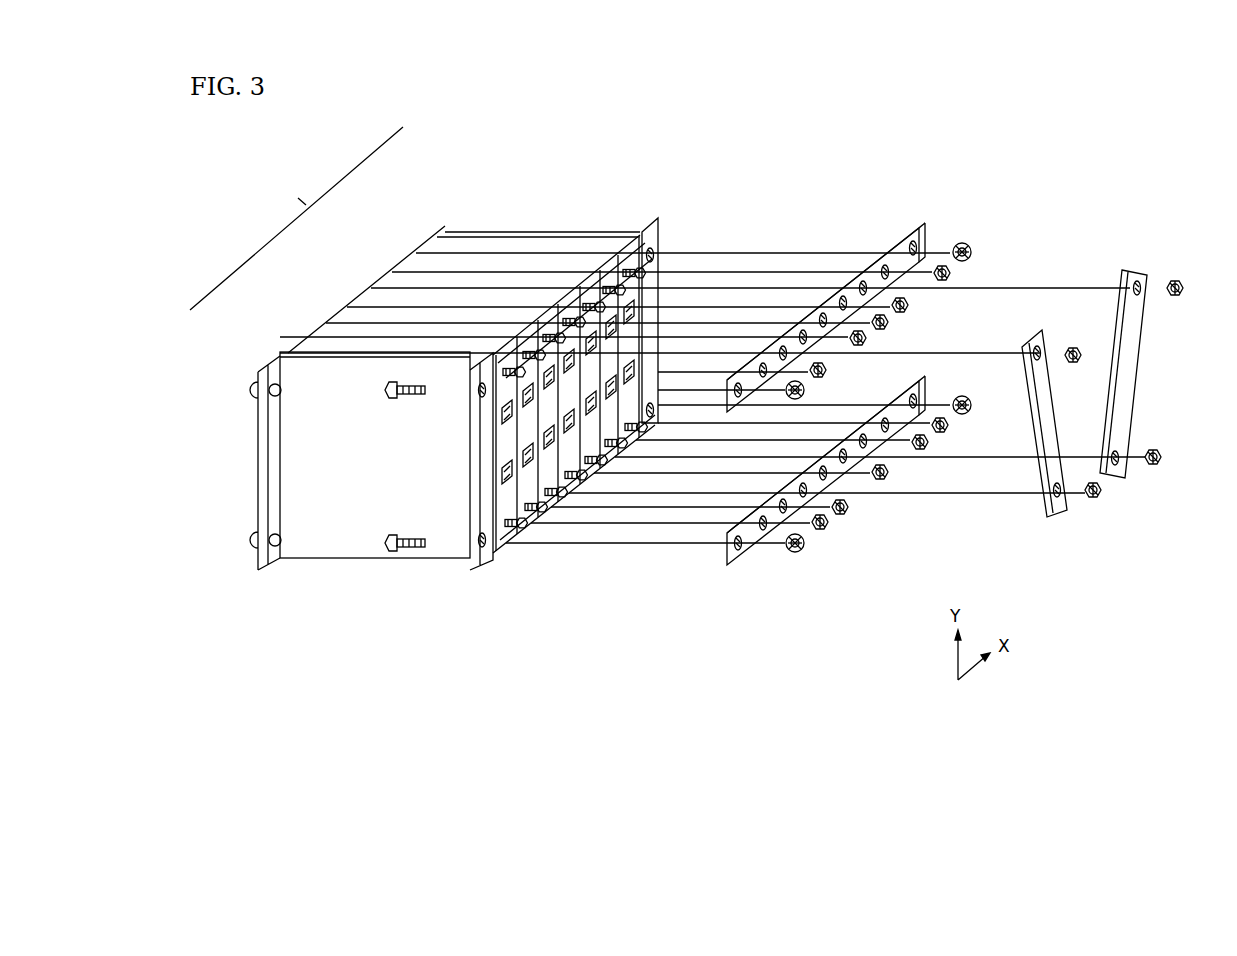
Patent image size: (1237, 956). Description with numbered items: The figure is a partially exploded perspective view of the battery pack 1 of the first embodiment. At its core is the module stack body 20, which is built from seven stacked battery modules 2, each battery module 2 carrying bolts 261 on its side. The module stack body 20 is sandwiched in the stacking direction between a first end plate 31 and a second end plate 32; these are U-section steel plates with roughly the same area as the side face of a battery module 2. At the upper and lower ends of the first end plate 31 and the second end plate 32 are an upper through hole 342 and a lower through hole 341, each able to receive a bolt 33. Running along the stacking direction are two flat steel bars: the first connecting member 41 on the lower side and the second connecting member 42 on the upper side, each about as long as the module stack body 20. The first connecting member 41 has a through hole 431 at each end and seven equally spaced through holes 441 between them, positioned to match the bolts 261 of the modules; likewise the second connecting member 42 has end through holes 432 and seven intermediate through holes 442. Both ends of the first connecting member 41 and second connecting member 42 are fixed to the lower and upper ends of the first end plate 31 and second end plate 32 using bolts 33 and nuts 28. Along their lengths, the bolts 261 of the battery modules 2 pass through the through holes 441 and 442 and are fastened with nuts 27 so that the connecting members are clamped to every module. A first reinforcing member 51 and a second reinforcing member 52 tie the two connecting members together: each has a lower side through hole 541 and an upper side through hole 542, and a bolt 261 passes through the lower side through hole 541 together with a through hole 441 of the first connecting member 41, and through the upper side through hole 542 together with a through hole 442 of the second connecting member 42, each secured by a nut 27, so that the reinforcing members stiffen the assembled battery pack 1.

The battery pack 1 is at (1050, 158).
The module stack body 20 is at (296, 218).
The battery module 2 is at (667, 355).
The bolt 261 is at (573, 390).
The nut 27 is at (1010, 395).
The nut 28 is at (902, 416).
The first end plate 31 is at (325, 530).
The second end plate 32 is at (660, 226).
The bolt 33 is at (410, 556).
The lower through hole 341 is at (600, 506).
The upper through hole 342 is at (576, 335).
The first connecting member 41 is at (728, 558).
The second connecting member 42 is at (924, 238).
The through hole 431 is at (861, 488).
The through hole 432 is at (827, 300).
The through hole 441 is at (789, 468).
The through hole 442 is at (789, 314).
The first reinforcing member 51 is at (1060, 416).
The second reinforcing member 52 is at (1147, 367).
The lower side through hole 541 is at (1123, 500).
The upper side through hole 542 is at (1071, 328).